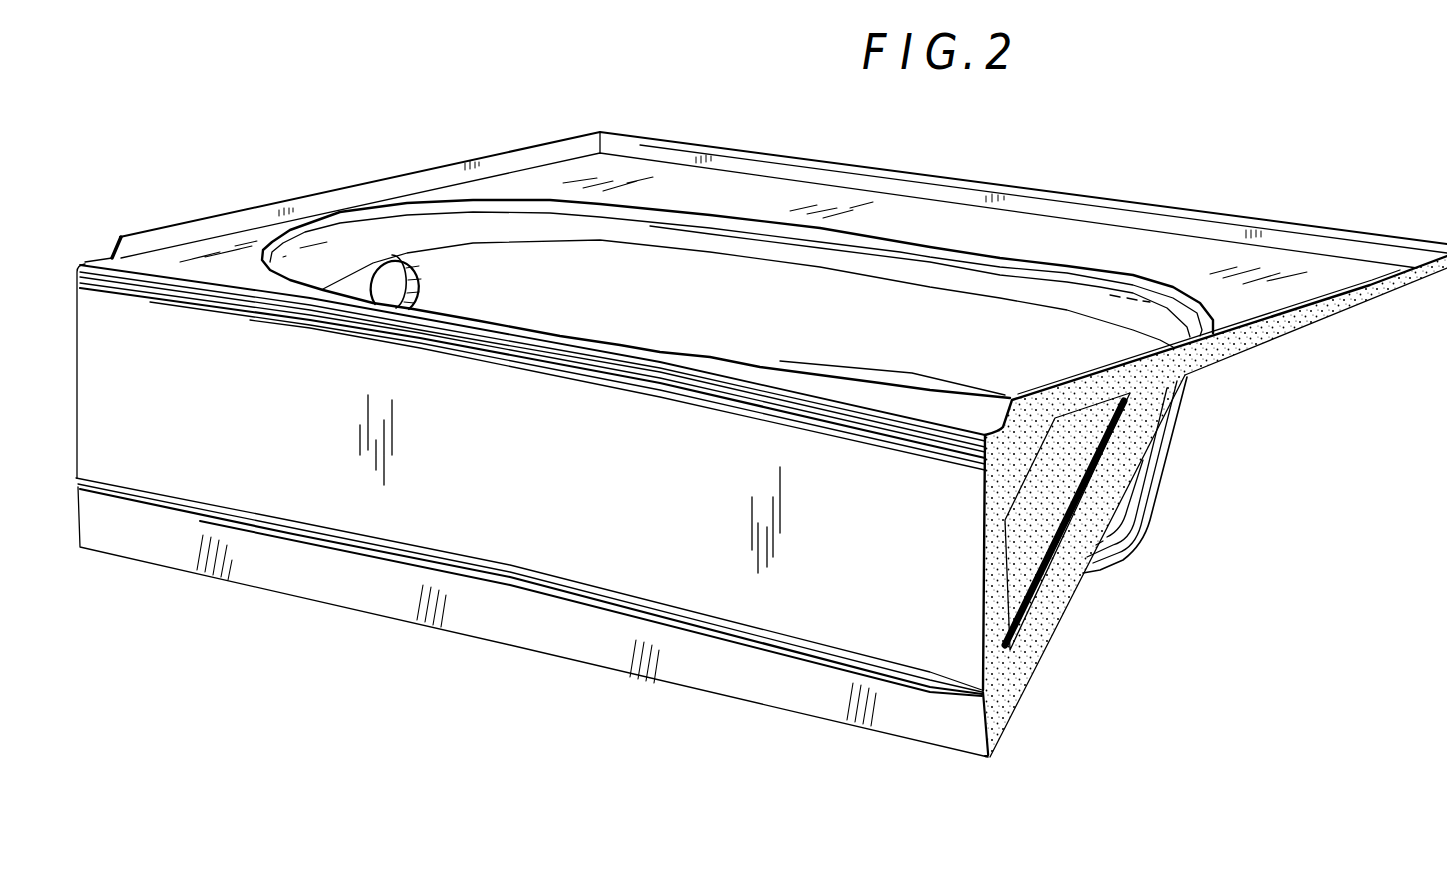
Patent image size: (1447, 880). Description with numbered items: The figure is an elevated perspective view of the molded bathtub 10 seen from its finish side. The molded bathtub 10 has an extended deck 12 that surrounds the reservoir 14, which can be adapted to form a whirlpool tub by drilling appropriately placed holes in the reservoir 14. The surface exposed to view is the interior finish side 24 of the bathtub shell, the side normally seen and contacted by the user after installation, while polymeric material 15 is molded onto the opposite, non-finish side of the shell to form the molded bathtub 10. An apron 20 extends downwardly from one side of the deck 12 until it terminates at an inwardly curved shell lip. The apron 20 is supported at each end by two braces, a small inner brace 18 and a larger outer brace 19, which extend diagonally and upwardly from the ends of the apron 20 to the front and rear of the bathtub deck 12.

The molded bathtub 10 is at (87, 247).
The extended deck 12 is at (1170, 250).
The reservoir 14 is at (923, 303).
The polymeric material 15 is at (1148, 514).
The small inner brace 18 is at (1030, 477).
The larger outer brace 19 is at (1058, 632).
The apron 20 is at (133, 470).
The interior finish side 24 is at (197, 367).